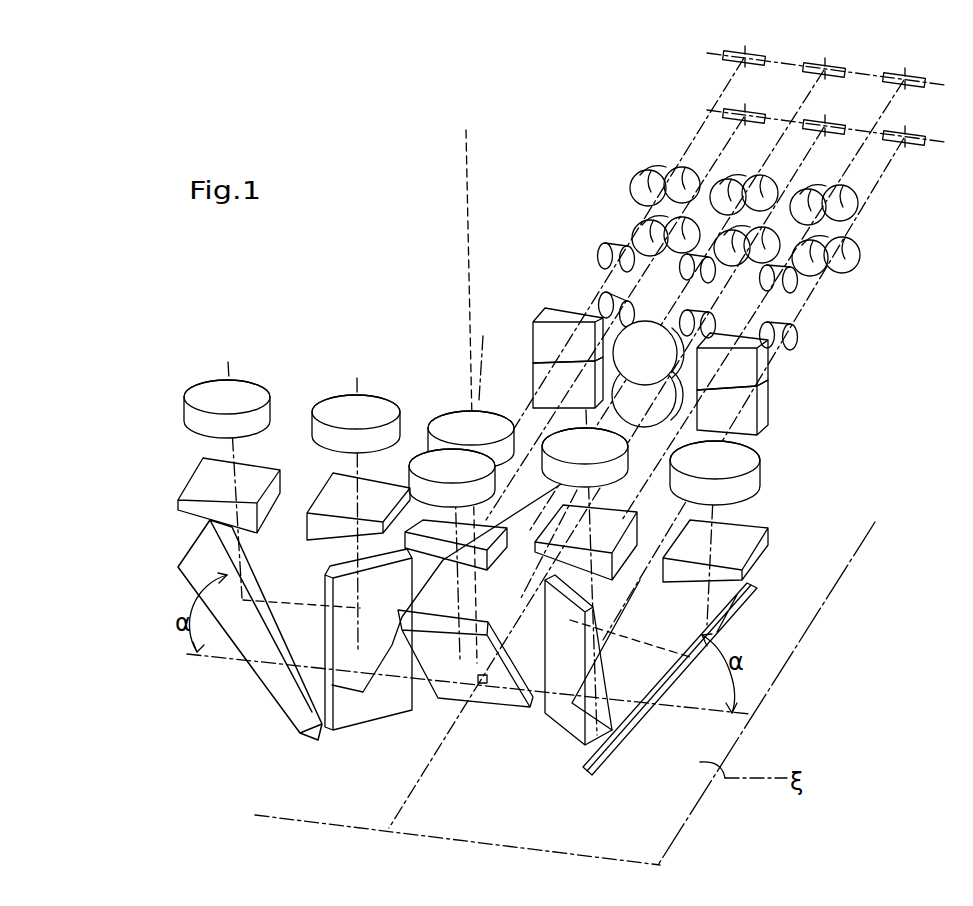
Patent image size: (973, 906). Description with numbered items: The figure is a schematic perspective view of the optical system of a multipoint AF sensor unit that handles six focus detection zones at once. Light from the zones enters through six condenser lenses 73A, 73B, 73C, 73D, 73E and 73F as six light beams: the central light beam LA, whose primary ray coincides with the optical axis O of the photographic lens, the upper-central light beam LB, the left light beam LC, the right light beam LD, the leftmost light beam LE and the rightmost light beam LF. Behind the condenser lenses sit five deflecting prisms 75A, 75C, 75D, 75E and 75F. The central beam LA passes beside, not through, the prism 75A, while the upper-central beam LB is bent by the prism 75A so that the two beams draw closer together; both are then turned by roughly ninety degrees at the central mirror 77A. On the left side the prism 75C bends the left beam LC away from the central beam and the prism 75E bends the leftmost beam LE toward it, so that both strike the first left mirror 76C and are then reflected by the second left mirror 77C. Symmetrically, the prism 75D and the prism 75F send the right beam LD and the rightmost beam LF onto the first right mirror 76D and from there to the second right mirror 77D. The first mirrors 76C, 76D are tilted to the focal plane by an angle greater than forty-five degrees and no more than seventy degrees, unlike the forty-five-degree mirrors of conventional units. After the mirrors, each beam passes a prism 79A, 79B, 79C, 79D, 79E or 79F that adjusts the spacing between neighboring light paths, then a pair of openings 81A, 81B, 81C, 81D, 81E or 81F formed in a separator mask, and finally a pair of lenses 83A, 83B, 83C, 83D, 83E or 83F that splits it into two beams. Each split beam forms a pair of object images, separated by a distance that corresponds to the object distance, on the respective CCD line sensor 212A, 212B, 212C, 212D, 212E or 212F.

The CCD line sensor 212A is at (830, 121).
The CCD line sensor 212B is at (828, 63).
The CCD line sensor 212C is at (912, 132).
The CCD line sensor 212D is at (752, 110).
The CCD line sensor 212E is at (910, 74).
The CCD line sensor 212F is at (751, 53).
The pair of lenses 83A is at (730, 230).
The pair of lenses 83B is at (756, 176).
The pair of lenses 83C is at (860, 252).
The pair of lenses 83D is at (646, 224).
The pair of lenses 83E is at (858, 196).
The pair of lenses 83F is at (650, 170).
The pair of openings 81A is at (690, 318).
The pair of openings 81B is at (712, 272).
The pair of openings 81C is at (793, 340).
The pair of openings 81D is at (603, 300).
The pair of openings 81E is at (792, 288).
The pair of openings 81F is at (604, 245).
The prism 79A is at (646, 428).
The prism 79B is at (620, 328).
The prism 79C is at (760, 410).
The prism 79D is at (548, 386).
The prism 79E is at (762, 377).
The prism 79F is at (543, 320).
The condenser lens 73A is at (462, 418).
The condenser lens 73B is at (427, 457).
The condenser lens 73C is at (562, 475).
The condenser lens 73D is at (330, 418).
The condenser lens 73E is at (752, 453).
The condenser lens 73F is at (203, 403).
The prism 75A is at (413, 535).
The prism 75C is at (633, 555).
The prism 75D is at (330, 497).
The prism 75E is at (753, 523).
The prism 75F is at (212, 475).
The first left mirror 76C is at (643, 712).
The first right mirror 76D is at (306, 700).
The central mirror 77A is at (493, 700).
The second left mirror 77C is at (557, 712).
The second right mirror 77D is at (377, 705).
The optical axis O is at (464, 153).
The central light beam LA is at (492, 355).
The upper-central light beam LB is at (453, 413).
The left light beam LC is at (592, 494).
The right light beam LD is at (357, 385).
The leftmost light beam LE is at (720, 505).
The rightmost light beam LF is at (240, 362).